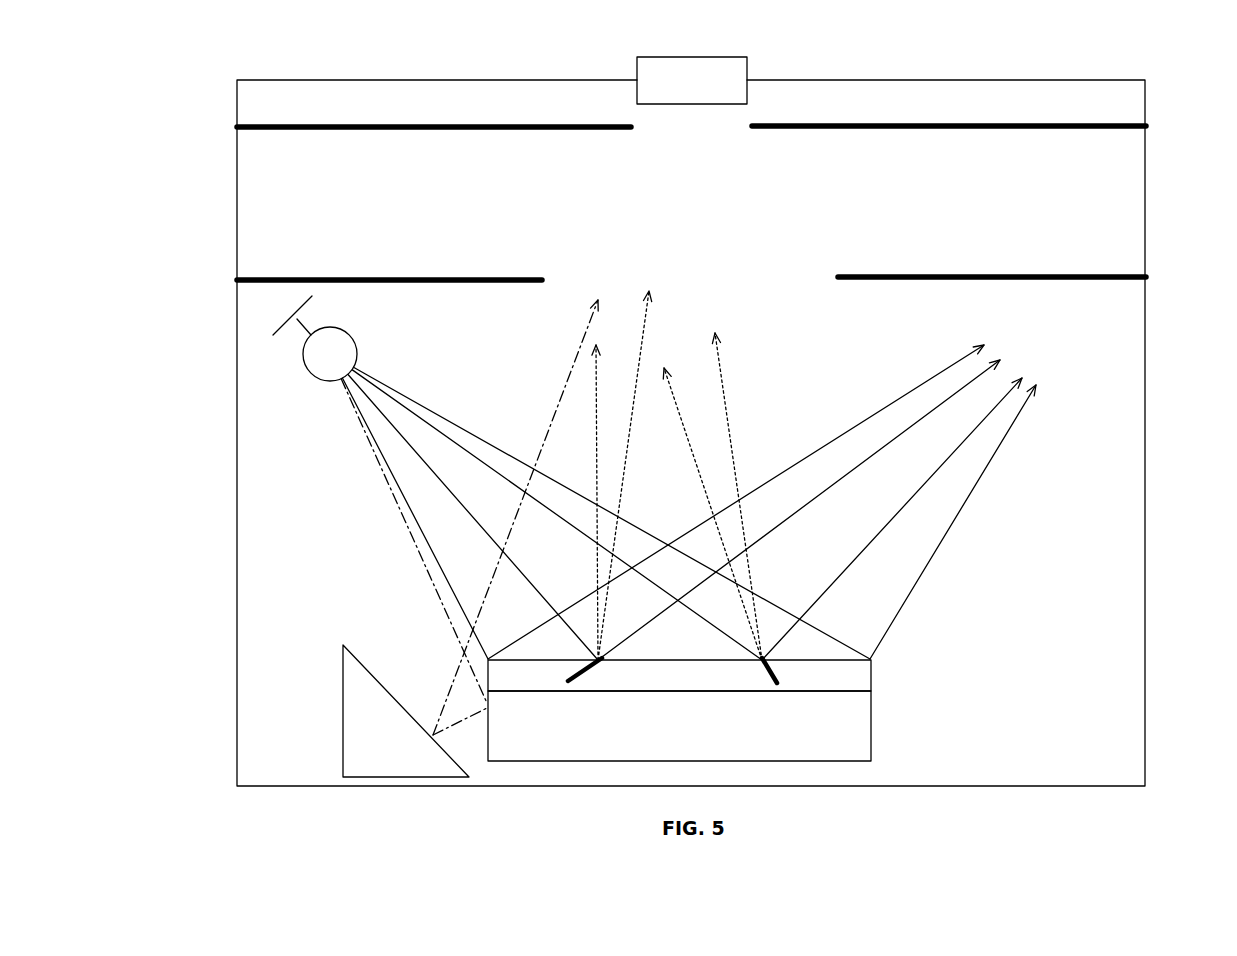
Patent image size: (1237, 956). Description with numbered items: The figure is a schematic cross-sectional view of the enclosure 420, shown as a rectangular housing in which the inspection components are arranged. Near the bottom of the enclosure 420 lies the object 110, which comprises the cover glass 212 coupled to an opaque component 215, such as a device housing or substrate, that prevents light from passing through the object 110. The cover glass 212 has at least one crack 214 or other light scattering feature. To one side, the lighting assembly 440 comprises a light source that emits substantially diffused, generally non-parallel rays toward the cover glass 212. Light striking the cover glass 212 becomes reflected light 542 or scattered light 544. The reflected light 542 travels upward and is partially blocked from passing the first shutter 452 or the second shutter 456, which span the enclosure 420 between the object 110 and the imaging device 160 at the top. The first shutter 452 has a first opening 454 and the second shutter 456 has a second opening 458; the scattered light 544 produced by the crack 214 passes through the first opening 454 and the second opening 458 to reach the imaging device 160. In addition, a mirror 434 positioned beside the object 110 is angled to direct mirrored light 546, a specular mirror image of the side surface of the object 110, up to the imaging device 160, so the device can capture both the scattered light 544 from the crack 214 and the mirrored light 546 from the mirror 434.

The object 110 is at (872, 762).
The imaging device 160 is at (686, 58).
The cover glass 212 is at (872, 680).
The crack 214 is at (578, 678).
The opaque component 215 is at (872, 718).
The enclosure 420 is at (968, 80).
The mirror 434 is at (358, 660).
The lighting assembly 440 is at (303, 355).
The first shutter 452 is at (1103, 275).
The first opening 454 is at (582, 267).
The second shutter 456 is at (1103, 125).
The second opening 458 is at (660, 143).
The reflected light 542 is at (950, 523).
The scattered light 544 is at (722, 388).
The mirrored light 546 is at (560, 398).